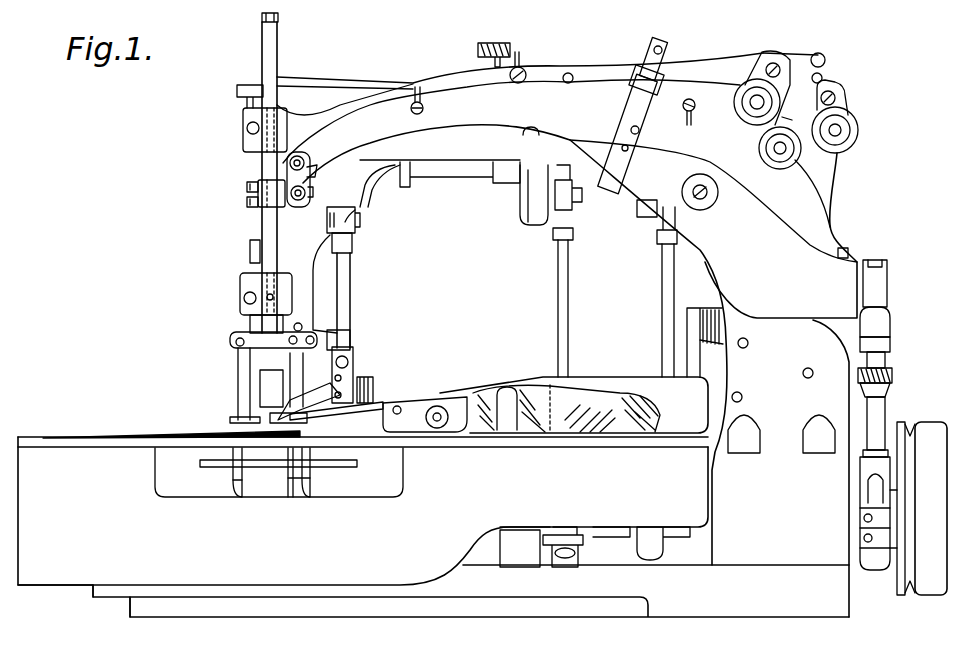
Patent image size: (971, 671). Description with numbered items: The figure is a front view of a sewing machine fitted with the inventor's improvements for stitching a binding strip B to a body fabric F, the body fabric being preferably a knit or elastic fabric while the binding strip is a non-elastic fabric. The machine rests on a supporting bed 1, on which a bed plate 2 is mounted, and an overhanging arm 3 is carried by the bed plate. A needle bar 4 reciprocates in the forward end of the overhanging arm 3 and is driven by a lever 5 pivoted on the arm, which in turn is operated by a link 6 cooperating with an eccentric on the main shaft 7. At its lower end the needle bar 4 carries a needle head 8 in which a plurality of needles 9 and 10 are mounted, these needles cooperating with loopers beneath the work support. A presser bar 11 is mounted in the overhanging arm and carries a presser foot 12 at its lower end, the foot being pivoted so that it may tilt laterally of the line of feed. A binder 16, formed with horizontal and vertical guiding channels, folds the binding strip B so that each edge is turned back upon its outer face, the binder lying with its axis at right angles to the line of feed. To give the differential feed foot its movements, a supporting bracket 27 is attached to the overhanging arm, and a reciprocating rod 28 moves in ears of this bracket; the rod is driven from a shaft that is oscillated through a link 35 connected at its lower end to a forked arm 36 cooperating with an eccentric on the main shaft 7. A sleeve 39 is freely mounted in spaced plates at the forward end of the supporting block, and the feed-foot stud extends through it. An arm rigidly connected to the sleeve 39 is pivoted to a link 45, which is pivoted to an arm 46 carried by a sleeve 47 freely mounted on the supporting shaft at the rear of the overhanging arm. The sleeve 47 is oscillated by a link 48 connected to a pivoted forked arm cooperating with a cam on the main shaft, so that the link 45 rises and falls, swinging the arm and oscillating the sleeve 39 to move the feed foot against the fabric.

The supporting bed 1 is at (480, 587).
The bed plate 2 is at (528, 448).
The overhanging arm 3 is at (455, 152).
The needle bar 4 is at (262, 55).
The lever 5 is at (567, 327).
The link 6 is at (878, 413).
The main shaft 7 is at (853, 527).
The needle head 8 is at (262, 328).
The needle 9 is at (238, 380).
The needles 10 is at (297, 355).
The presser bar 11 is at (267, 377).
The presser foot 12 is at (240, 413).
The binder 16 is at (587, 383).
The supporting bracket 27 is at (332, 338).
The reciprocating rod 28 is at (353, 365).
The link 35 is at (673, 282).
The forked arm 36 is at (650, 545).
The sleeve 39 is at (357, 383).
The link 45 is at (347, 288).
The arm 46 is at (372, 207).
The sleeve 47 is at (400, 173).
The link 48 is at (562, 302).
The binding strip B is at (622, 397).
The body fabric F is at (130, 432).